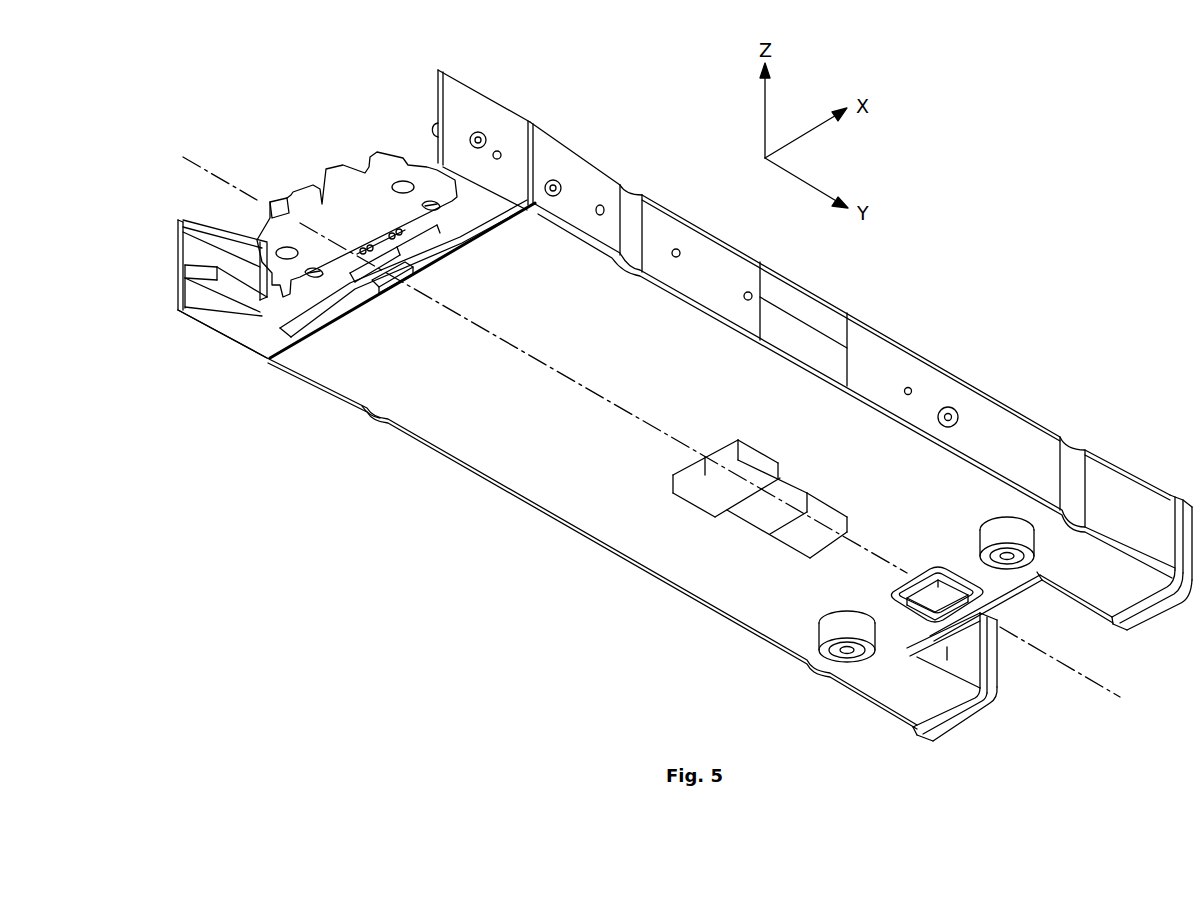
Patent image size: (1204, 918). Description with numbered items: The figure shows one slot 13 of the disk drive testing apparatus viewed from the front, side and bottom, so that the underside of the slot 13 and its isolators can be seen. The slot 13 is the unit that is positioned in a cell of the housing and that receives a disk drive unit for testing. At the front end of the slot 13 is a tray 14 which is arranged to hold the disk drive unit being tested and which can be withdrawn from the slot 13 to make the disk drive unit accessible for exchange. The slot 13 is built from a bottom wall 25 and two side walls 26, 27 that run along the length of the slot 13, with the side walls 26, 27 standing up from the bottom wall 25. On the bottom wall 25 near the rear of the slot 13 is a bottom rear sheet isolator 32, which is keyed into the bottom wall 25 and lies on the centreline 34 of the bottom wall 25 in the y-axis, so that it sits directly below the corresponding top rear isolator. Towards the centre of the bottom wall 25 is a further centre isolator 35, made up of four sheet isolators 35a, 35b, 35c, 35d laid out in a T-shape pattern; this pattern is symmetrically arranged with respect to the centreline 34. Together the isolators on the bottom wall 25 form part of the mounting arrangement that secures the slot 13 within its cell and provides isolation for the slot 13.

The slot 13 is at (922, 352).
The tray 14 is at (377, 152).
The bottom wall 25 is at (463, 415).
The side wall 26 is at (377, 410).
The side wall 27 is at (573, 172).
The sheet isolator 32 is at (933, 612).
The centreline 34 is at (665, 437).
The centre isolator 35 is at (676, 502).
The sheet isolator 35a is at (667, 478).
The sheet isolator 35b is at (747, 440).
The sheet isolator 35c is at (793, 487).
The sheet isolator 35d is at (833, 508).